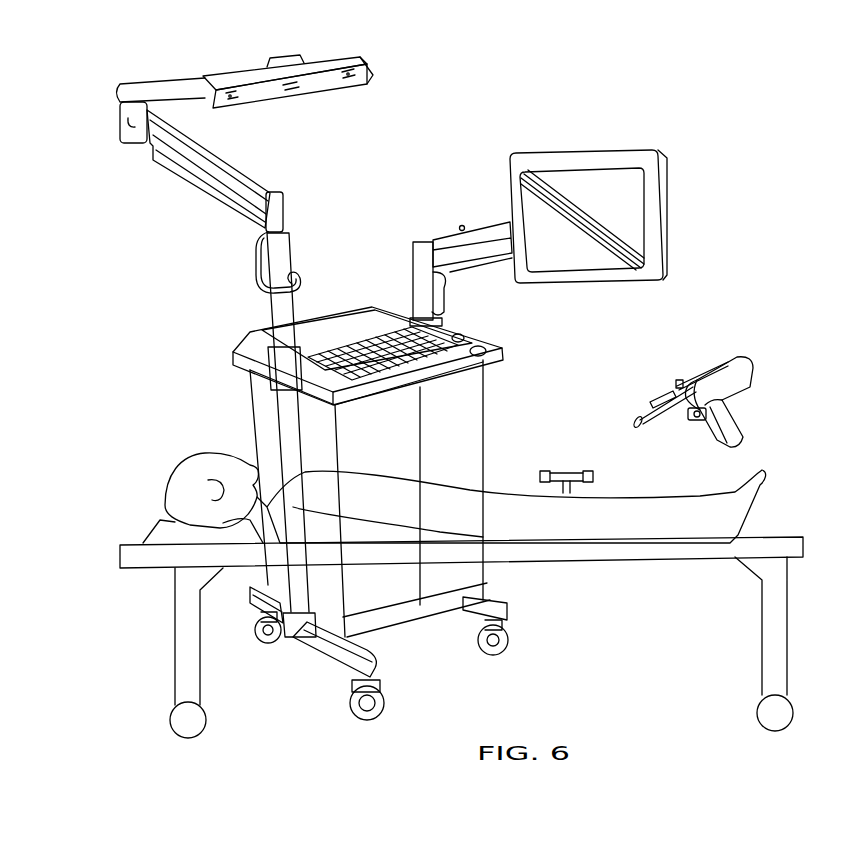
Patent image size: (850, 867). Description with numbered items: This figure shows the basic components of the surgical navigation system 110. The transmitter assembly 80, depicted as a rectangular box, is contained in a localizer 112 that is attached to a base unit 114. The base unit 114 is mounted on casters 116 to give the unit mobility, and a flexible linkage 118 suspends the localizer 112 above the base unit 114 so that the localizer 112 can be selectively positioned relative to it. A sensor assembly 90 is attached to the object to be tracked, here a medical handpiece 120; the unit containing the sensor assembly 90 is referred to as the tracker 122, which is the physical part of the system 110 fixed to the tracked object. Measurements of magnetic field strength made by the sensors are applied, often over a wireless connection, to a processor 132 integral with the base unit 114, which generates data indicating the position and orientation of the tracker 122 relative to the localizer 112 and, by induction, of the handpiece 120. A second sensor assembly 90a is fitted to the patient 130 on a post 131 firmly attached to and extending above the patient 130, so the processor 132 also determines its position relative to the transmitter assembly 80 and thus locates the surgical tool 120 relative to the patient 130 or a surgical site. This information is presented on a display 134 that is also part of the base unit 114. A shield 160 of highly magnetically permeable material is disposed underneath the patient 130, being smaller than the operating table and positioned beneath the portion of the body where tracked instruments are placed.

The transmitter assembly 80 is at (267, 60).
The sensor assembly 90 is at (672, 386).
The second sensor assembly 90a is at (570, 473).
The navigation system 110 is at (748, 252).
The localizer 112 is at (344, 52).
The base unit 114 is at (247, 408).
The casters 116 is at (385, 700).
The flexible linkage 118 is at (200, 183).
The medical handpiece 120 is at (753, 368).
The tracker 122 is at (700, 373).
The patient 130 is at (167, 490).
The post 131 is at (593, 482).
The processor 132 is at (330, 300).
The display 134 is at (597, 150).
The shield 160 is at (583, 547).